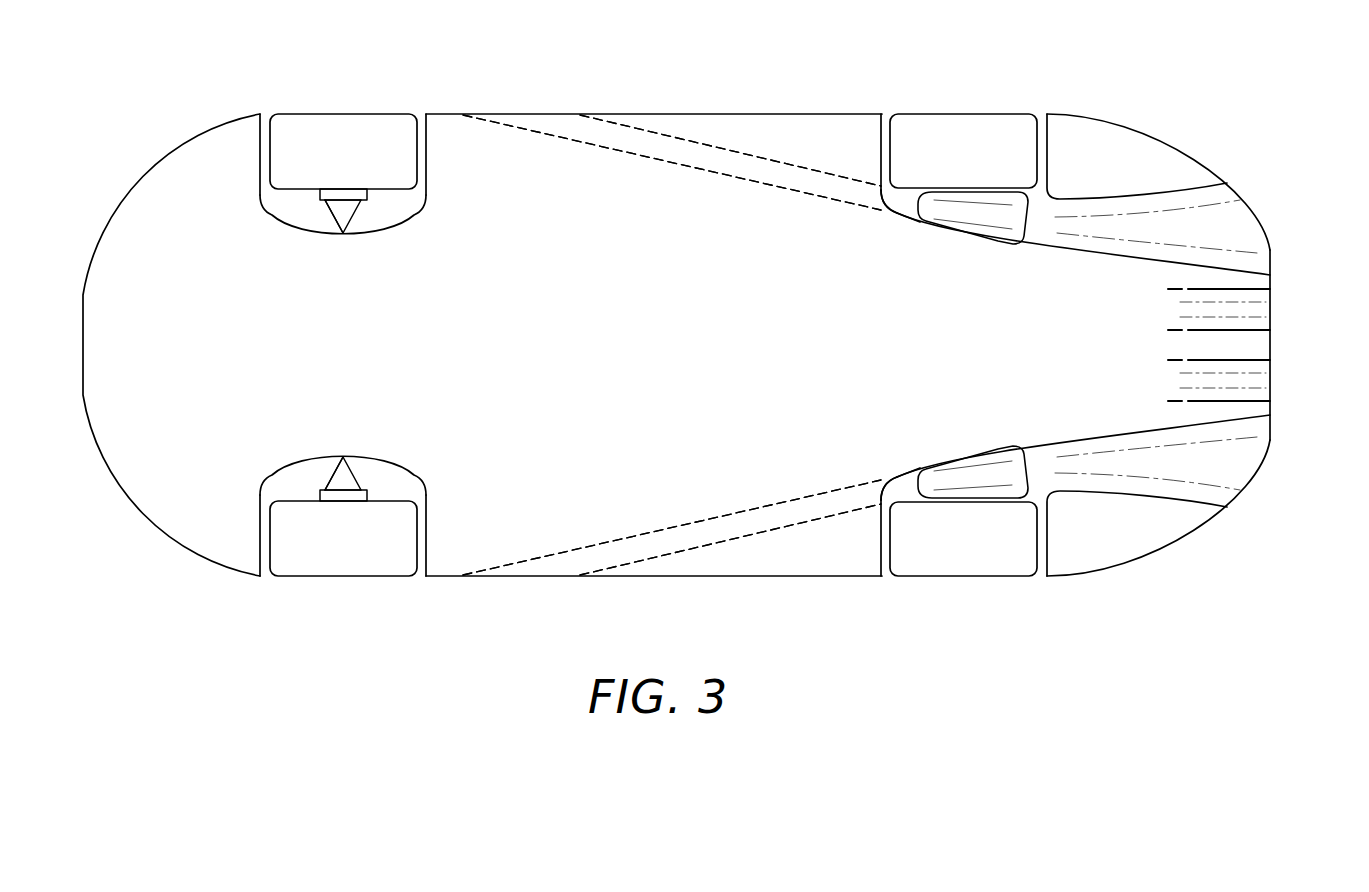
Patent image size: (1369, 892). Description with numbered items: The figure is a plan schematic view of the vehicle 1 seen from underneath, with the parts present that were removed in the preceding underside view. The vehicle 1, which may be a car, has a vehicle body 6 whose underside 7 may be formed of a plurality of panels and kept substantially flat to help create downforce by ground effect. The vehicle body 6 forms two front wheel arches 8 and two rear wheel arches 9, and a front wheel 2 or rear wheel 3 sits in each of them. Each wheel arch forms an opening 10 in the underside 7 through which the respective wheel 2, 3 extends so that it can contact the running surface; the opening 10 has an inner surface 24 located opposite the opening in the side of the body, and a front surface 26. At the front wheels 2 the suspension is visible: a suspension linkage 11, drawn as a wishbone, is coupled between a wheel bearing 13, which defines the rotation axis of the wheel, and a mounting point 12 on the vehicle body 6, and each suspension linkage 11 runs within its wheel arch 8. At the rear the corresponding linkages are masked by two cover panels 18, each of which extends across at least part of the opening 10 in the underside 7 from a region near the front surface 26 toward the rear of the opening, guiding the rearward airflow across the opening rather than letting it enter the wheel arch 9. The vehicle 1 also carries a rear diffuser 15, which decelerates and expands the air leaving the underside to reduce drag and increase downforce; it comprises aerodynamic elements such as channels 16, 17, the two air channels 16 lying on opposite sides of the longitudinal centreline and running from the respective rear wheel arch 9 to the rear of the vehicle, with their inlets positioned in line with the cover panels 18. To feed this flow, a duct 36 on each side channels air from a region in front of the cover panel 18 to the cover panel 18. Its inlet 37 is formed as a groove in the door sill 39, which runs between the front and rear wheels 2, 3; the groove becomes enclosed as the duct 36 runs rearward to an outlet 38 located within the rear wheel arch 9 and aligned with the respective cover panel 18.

The vehicle 1 is at (1245, 78).
The front wheels 2 is at (344, 113).
The rear wheels 3 is at (965, 113).
The vehicle body 6 is at (737, 587).
The underside 7 is at (93, 345).
The front wheel arches 8 is at (422, 104).
The rear wheel arches 9 is at (1042, 104).
The opening 10 is at (262, 192).
The suspension linkage 11 is at (353, 217).
The mounting point 12 is at (343, 235).
The bearings 13 is at (317, 203).
The rear diffuser 15 is at (1300, 347).
The air channels 16 is at (1256, 221).
The channels 17 is at (1262, 305).
The cover panel 18 is at (999, 223).
The inner surface 24 is at (948, 234).
The front surface 26 is at (882, 212).
The duct 36 is at (673, 163).
The inlet 37 is at (535, 113).
The outlet 38 is at (880, 197).
The door sills 39 is at (618, 113).